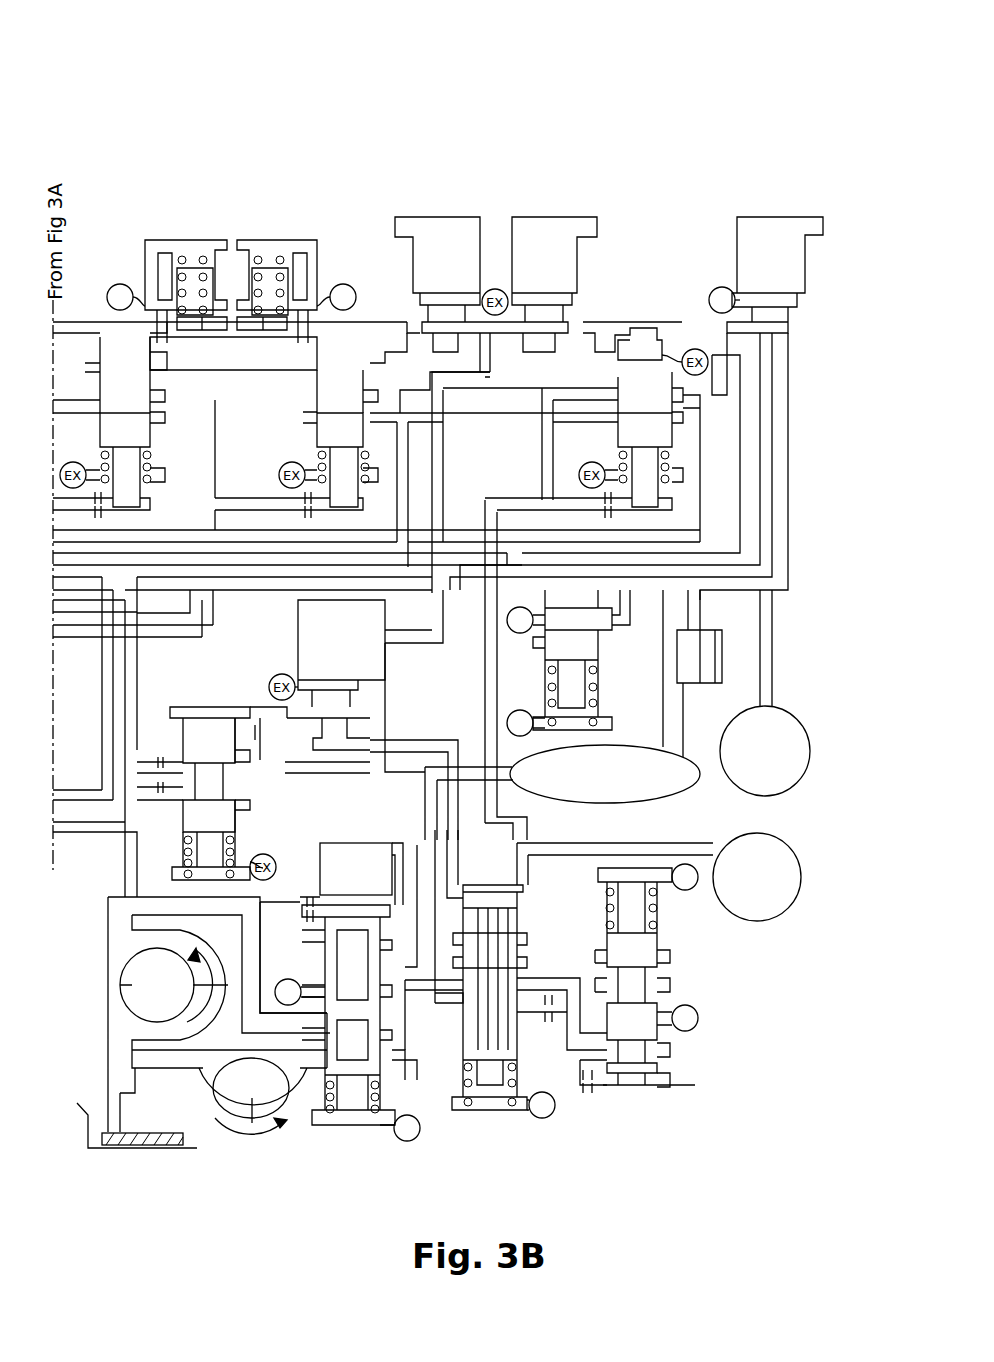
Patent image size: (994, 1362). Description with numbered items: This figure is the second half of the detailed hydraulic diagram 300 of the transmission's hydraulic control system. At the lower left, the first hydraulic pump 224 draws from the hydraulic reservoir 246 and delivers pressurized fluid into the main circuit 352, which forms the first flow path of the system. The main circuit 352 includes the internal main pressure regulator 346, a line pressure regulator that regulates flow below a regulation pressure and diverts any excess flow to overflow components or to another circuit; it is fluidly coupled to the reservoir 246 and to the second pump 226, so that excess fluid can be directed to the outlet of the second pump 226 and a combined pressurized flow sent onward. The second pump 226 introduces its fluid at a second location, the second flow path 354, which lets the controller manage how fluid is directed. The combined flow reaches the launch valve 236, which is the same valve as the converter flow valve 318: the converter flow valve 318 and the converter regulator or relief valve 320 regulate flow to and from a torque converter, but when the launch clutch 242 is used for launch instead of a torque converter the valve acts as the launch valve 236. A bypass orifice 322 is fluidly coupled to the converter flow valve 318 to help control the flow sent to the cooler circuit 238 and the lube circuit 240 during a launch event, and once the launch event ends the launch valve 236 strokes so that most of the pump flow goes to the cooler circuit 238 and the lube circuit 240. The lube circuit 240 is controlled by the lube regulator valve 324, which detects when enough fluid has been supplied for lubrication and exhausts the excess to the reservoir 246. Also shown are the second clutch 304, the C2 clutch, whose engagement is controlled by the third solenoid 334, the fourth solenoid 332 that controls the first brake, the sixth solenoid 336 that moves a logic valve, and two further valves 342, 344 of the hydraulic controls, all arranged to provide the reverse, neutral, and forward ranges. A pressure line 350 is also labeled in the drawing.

The hydraulic diagram 300 is at (247, 130).
The valve 342 is at (200, 248).
The valve 344 is at (276, 248).
The fourth solenoid 332 is at (440, 237).
The third solenoid 334 is at (546, 237).
The sixth solenoid 336 is at (770, 232).
The lube regulator valve 324 is at (583, 640).
The cooler circuit 238 is at (597, 803).
The lube circuit 240 is at (810, 742).
The launch clutch 242 is at (355, 842).
The launch clutch pressure line 350 is at (386, 842).
The main circuit 352 is at (128, 862).
The first hydraulic pump 224 is at (133, 993).
The second pump 226 is at (247, 1097).
The hydraulic reservoir 246 is at (128, 1160).
The main pressure regulator 346 is at (355, 1138).
The second flow path 354 is at (410, 1050).
The converter flow valve 318 is at (507, 1118).
The launch valve 236 is at (533, 952).
The bypass orifice 322 is at (549, 1028).
The second clutch 304 is at (757, 912).
The converter regulator or relief valve 320 is at (682, 1055).